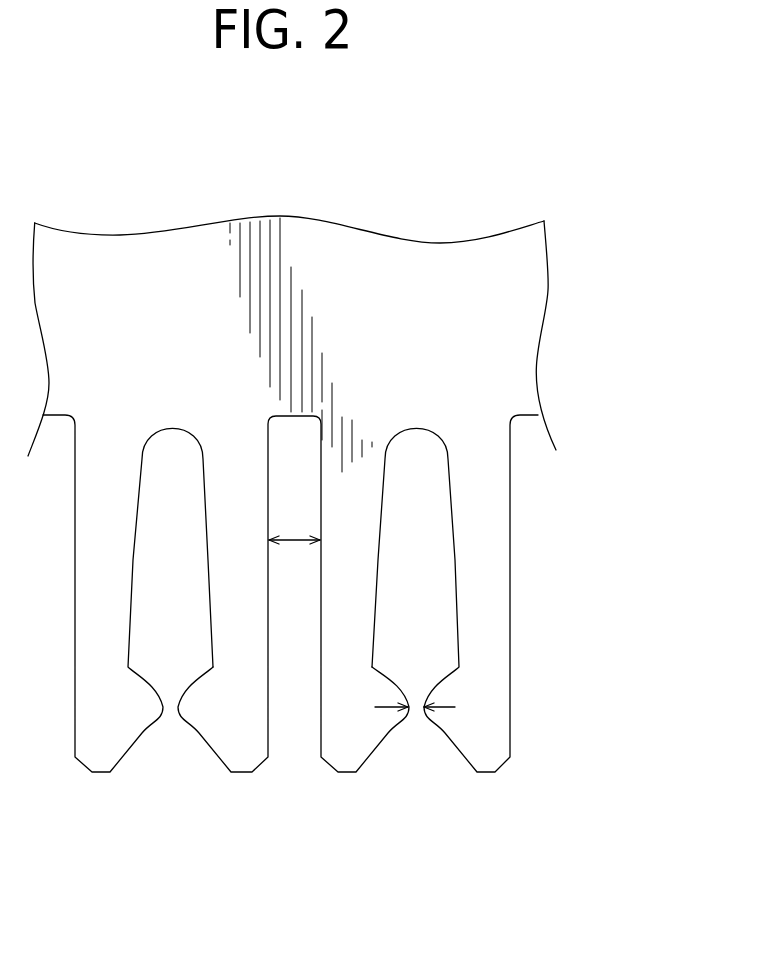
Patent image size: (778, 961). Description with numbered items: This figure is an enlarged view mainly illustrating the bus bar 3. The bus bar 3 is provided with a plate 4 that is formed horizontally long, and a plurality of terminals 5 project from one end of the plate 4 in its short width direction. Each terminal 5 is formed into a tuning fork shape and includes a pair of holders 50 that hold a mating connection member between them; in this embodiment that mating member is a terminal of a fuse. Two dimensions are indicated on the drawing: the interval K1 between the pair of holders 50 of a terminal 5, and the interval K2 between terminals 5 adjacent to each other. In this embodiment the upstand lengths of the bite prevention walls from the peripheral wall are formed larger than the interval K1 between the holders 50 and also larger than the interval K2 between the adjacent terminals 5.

The bus bar 3 is at (329, 531).
The plate 4 is at (460, 307).
The terminal 5 is at (255, 773).
The holder 50 is at (235, 580).
The interval between a pair of holders K1 is at (415, 710).
The interval between adjacent terminals K2 is at (293, 546).